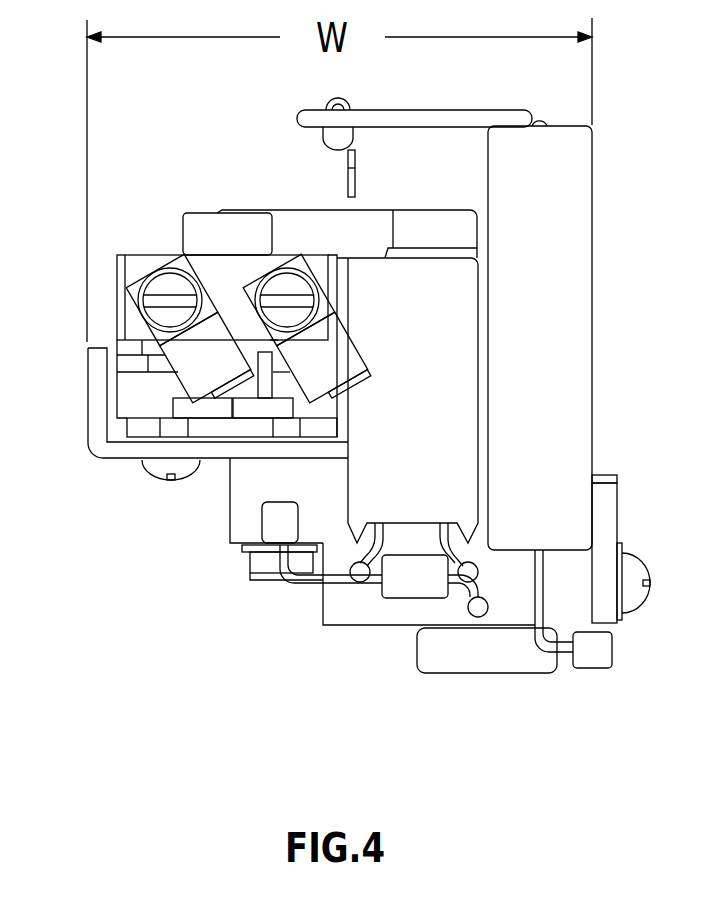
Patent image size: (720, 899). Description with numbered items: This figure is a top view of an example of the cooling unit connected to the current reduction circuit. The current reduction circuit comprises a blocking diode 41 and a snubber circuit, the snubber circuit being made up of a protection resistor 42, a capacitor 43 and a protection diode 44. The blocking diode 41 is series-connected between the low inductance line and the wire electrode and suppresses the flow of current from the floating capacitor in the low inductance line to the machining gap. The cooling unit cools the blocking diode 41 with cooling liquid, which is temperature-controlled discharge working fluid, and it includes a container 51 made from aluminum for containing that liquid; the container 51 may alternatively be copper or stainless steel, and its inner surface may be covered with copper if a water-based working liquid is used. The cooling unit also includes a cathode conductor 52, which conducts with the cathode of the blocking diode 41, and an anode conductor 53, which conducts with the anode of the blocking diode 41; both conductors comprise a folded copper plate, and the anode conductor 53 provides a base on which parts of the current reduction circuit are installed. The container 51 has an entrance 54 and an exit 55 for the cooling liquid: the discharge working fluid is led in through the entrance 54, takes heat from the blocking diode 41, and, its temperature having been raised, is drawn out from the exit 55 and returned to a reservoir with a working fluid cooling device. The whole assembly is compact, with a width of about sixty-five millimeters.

The blocking diode 41 is at (120, 392).
The protection resistor 42 is at (473, 385).
The capacitor 43 is at (492, 670).
The protection diode 44 is at (412, 590).
The container 51 is at (172, 258).
The cathode conductor 52 is at (120, 458).
The anode conductor 53 is at (612, 503).
The entrance 54 is at (203, 285).
The exit 55 is at (268, 285).